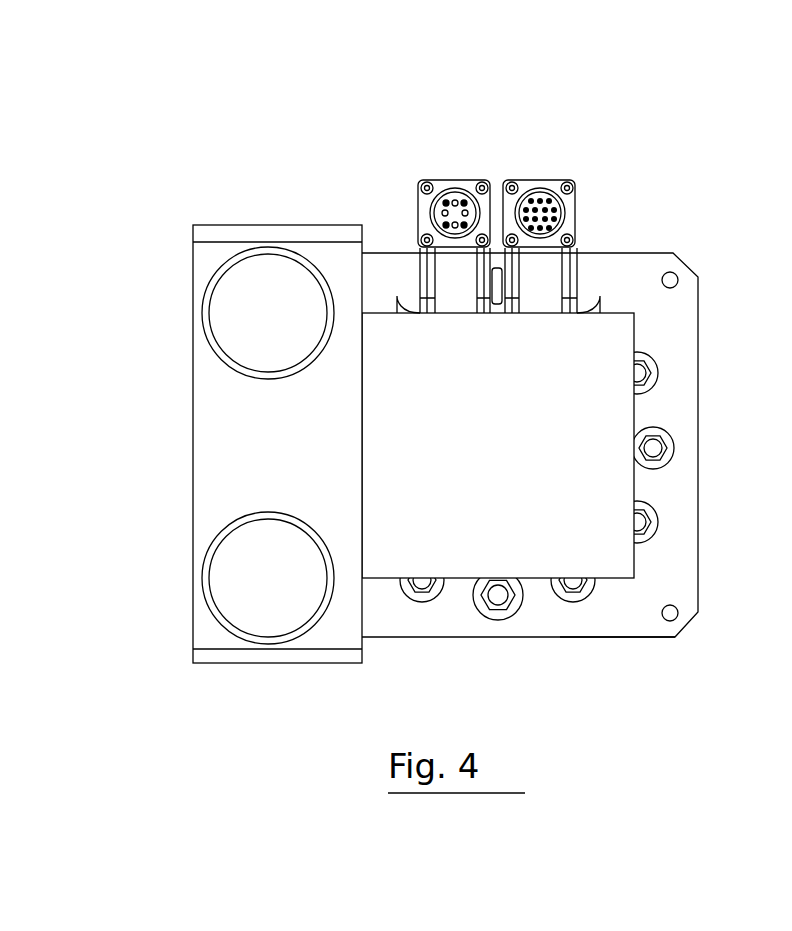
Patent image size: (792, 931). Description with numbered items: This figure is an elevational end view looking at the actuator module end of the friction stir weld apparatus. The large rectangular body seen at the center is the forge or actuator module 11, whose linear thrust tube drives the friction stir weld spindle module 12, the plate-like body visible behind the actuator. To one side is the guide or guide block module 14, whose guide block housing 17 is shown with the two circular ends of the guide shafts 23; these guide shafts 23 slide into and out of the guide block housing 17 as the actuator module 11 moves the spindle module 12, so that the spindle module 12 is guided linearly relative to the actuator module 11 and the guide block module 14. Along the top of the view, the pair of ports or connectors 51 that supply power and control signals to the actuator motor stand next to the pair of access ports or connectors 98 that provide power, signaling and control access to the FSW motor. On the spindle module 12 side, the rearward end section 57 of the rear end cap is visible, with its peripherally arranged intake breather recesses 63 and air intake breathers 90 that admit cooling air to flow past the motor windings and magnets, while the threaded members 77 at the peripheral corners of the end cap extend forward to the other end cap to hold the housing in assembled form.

The actuator module 11 is at (532, 542).
The friction stir weld spindle module 12 is at (640, 250).
The guide block module 14 is at (268, 225).
The guide block housing 17 is at (217, 441).
The guide shafts 23 is at (242, 310).
The connectors 51 is at (450, 280).
The rearward end section 57 is at (608, 617).
The intake breather recesses 63 is at (648, 365).
The threaded members 77 is at (674, 278).
The air intake breathers 90 is at (656, 446).
The access ports 98 is at (543, 200).